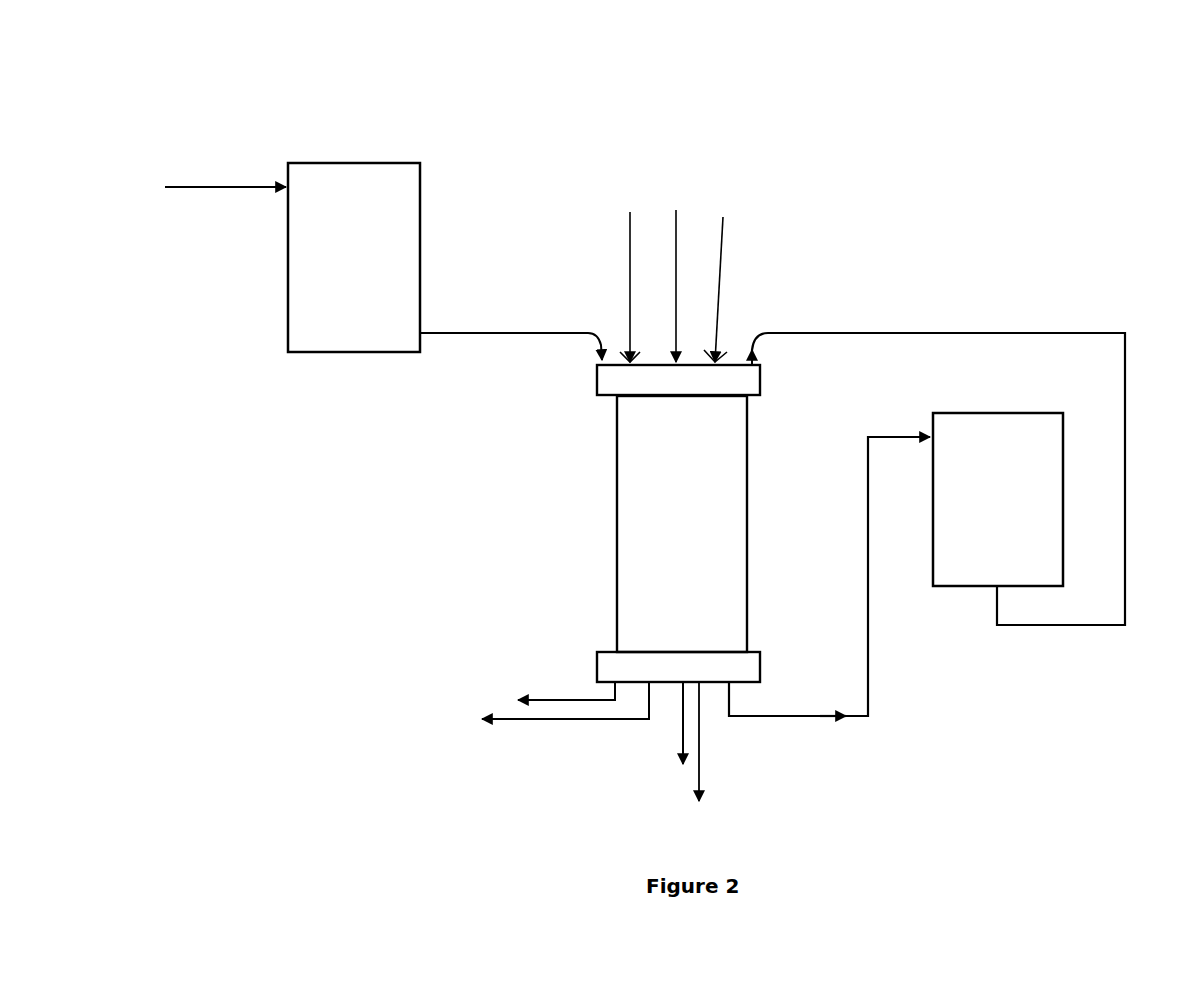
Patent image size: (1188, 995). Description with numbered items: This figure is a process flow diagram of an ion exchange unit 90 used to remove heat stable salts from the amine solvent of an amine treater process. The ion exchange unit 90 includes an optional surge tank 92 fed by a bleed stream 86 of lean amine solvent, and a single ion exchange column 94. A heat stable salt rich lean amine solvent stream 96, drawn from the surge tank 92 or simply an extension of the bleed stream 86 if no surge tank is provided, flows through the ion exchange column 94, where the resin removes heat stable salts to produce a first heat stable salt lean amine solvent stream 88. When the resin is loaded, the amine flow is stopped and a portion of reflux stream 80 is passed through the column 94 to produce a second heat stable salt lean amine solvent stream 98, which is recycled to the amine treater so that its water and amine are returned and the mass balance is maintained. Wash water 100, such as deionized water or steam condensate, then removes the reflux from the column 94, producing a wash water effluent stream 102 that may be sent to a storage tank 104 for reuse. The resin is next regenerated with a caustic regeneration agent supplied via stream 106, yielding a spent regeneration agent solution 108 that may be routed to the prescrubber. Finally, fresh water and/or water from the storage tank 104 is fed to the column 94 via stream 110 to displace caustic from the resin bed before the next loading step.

The ion exchange unit 90 is at (883, 132).
The surge tank 92 is at (354, 257).
The bleed stream 86 is at (225, 174).
The heat stable salt rich lean amine solvent stream 96 is at (511, 331).
The ion exchange column 94 is at (678, 523).
The regeneration agent stream 106 is at (633, 274).
The reflux stream 80 is at (670, 274).
The wash water stream 100 is at (725, 271).
The wash water stream from tank 110 is at (800, 503).
The storage tank 104 is at (998, 499).
The wash water effluent stream 102 is at (829, 576).
The first heat stable salt lean amine solvent stream 88 is at (550, 706).
The second heat stable salt lean amine solvent stream 98 is at (666, 724).
The spent regeneration agent solution 108 is at (723, 741).